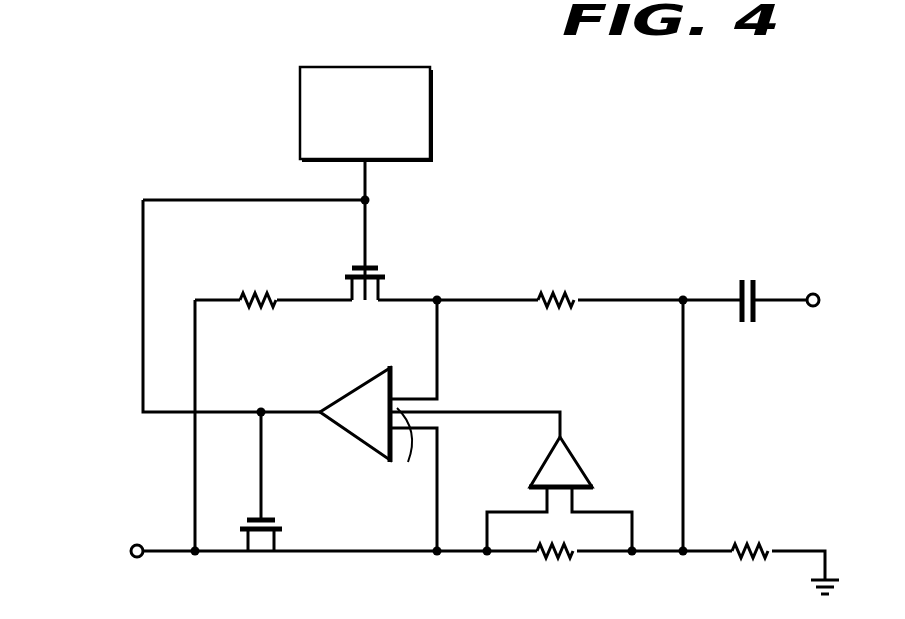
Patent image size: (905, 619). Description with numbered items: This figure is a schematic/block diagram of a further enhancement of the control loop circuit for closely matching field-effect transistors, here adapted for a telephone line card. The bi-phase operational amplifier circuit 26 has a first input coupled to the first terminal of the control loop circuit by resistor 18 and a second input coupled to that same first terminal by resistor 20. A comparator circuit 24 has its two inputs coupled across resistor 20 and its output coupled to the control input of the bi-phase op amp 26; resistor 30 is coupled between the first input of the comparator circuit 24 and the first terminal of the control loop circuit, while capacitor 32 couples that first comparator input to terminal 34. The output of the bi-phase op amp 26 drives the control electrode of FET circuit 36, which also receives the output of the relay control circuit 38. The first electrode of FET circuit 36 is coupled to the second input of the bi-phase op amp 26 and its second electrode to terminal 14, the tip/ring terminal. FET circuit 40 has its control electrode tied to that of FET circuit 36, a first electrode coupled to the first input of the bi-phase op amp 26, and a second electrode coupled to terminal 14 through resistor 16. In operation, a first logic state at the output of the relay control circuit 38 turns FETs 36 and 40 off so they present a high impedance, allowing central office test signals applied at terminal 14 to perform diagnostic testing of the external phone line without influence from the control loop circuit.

The terminal 14 is at (140, 544).
The resistor 16 is at (250, 288).
The resistor 18 is at (560, 290).
The resistor 20 is at (557, 562).
The comparator circuit 24 is at (577, 462).
The bi-phase operational amplifier circuit 26 is at (334, 428).
The resistor 30 is at (752, 539).
The capacitor 32 is at (738, 288).
The terminal 34 is at (818, 292).
The FET circuit 36 is at (262, 557).
The relay control circuit 38 is at (434, 128).
The FET circuit 40 is at (386, 268).